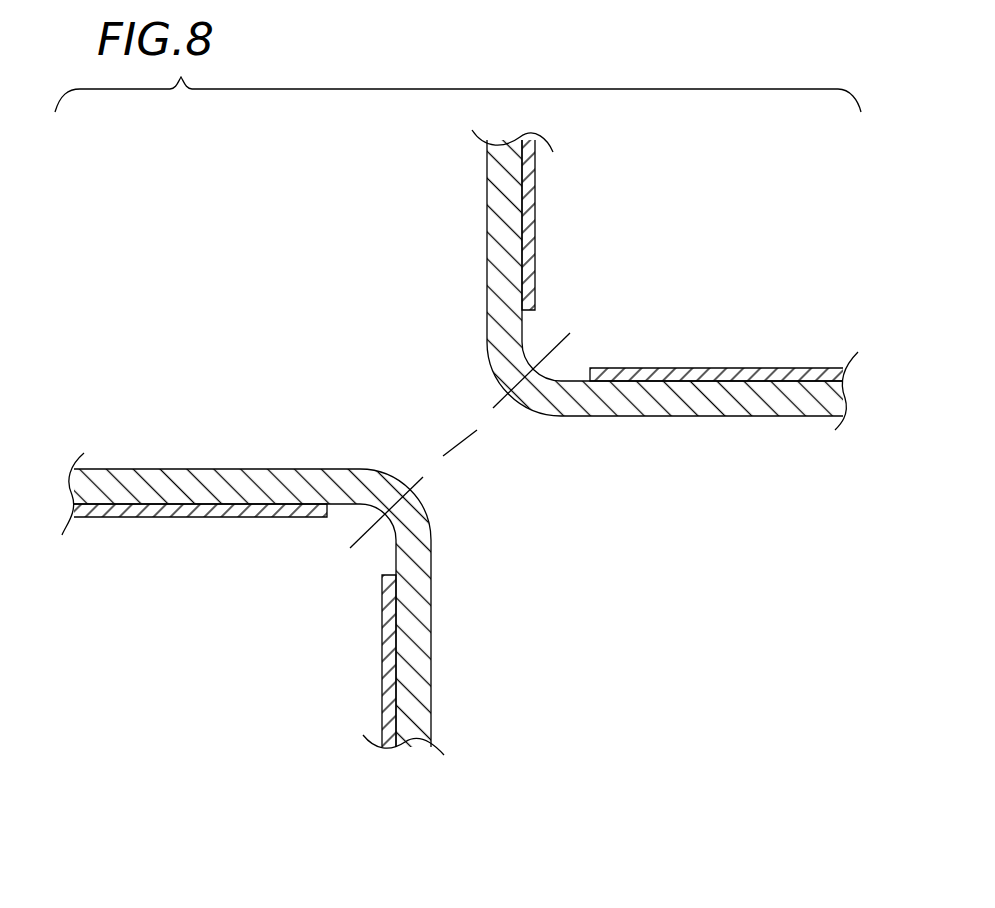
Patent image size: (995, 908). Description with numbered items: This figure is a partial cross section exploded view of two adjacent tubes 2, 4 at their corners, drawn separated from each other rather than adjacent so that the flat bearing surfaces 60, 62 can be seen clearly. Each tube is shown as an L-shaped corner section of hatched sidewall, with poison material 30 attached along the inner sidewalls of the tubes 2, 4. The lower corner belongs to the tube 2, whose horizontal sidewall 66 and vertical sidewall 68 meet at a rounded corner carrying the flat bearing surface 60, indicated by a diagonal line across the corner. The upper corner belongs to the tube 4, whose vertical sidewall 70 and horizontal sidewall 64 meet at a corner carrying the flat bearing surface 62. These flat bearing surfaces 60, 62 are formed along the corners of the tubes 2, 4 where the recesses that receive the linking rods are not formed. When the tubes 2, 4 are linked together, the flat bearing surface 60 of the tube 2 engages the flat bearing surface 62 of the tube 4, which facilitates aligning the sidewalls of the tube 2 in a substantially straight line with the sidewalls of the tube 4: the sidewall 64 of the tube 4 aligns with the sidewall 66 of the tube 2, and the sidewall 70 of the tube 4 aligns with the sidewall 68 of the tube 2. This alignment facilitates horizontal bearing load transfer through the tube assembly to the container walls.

The tube 2 is at (288, 573).
The tube 4 is at (625, 307).
The poison material 30 is at (535, 200).
The flat bearing surface 60 is at (422, 508).
The flat bearing surface 62 is at (517, 397).
The sidewall 64 is at (757, 418).
The sidewall 66 is at (249, 468).
The sidewall 68 is at (432, 652).
The sidewall 70 is at (487, 247).